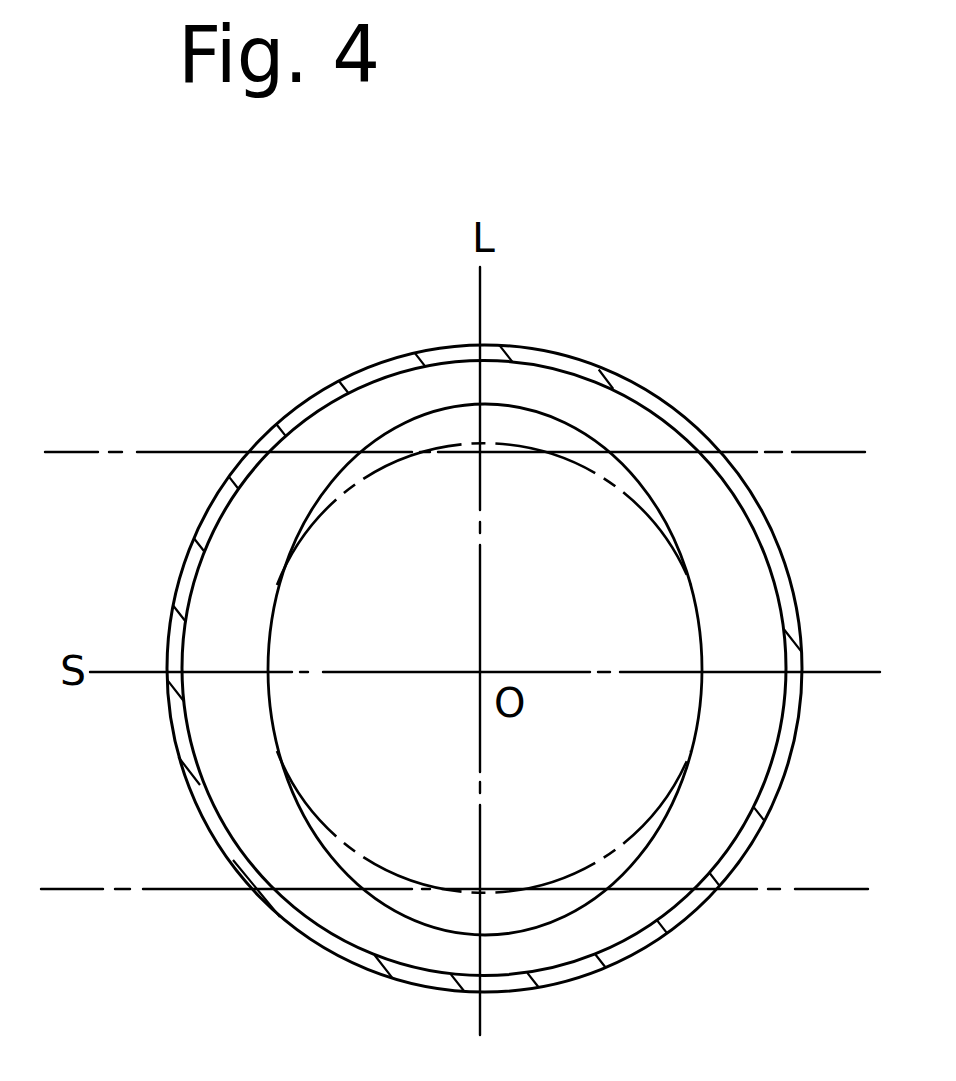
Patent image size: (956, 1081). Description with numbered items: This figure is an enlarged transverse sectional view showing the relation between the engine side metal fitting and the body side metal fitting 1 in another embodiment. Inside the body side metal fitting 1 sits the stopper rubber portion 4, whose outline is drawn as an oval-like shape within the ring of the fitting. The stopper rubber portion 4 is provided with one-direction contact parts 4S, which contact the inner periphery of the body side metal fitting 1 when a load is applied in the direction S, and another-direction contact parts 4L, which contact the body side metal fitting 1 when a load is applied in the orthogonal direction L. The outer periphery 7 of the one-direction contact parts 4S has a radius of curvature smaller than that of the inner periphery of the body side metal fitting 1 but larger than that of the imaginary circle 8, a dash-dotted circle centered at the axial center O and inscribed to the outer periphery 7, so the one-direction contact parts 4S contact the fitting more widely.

The body side metal fitting 1 is at (650, 403).
The stopper rubber portion 4 is at (479, 629).
The another-direction contact parts 4L is at (413, 428).
The one-direction contact parts 4S is at (313, 785).
The outer periphery 7 is at (307, 517).
The imaginary circle 8 is at (620, 497).